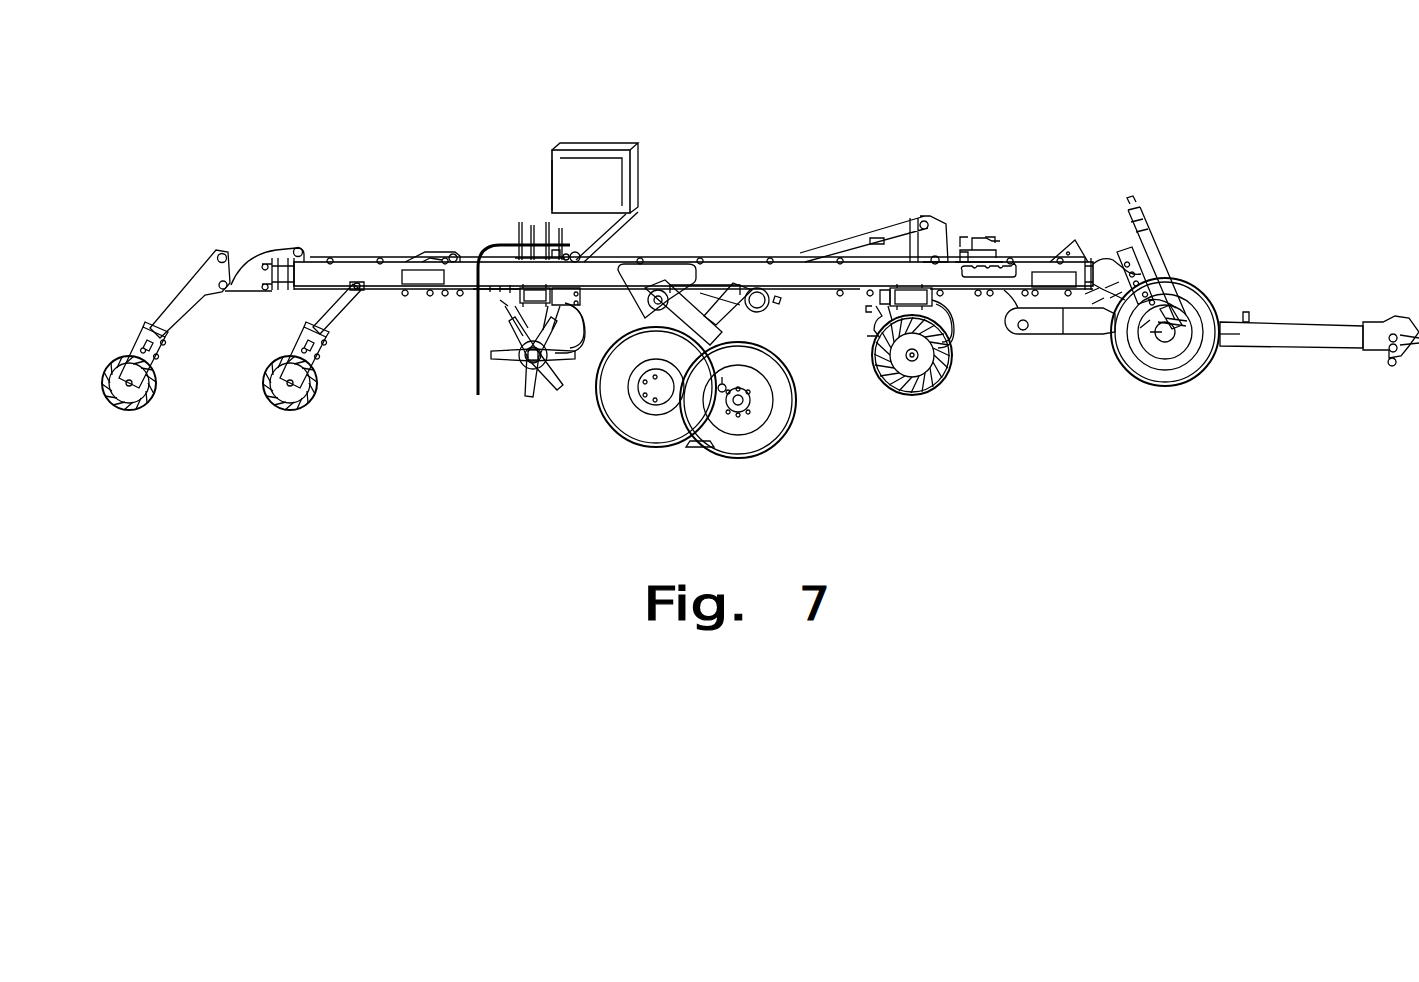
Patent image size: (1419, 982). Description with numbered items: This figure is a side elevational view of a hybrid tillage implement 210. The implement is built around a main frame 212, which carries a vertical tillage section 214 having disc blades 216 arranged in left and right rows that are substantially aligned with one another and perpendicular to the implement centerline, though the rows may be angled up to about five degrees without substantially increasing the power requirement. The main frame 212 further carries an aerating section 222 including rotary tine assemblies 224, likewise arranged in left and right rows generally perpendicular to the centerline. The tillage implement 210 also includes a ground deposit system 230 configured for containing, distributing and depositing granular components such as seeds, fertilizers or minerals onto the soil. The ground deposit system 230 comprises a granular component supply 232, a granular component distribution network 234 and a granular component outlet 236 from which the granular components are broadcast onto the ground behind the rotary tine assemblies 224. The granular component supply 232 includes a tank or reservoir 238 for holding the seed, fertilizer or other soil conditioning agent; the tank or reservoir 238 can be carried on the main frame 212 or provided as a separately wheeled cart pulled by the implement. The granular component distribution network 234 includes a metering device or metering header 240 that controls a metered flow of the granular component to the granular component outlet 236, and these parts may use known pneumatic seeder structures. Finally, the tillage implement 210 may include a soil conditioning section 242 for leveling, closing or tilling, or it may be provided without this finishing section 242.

The tillage implement 210 is at (1220, 213).
The main frame 212 is at (1328, 332).
The vertical tillage section 214 is at (913, 405).
The disc blades 216 is at (940, 376).
The aerating section 222 is at (521, 408).
The rotary tine assemblies 224 is at (545, 397).
The ground deposit system 230 is at (598, 135).
The granular component supply 232 is at (543, 160).
The granular component distribution network 234 is at (478, 340).
The granular component outlet 236 is at (478, 395).
The tank or reservoir 238 is at (612, 178).
The metering device or metering header 240 is at (578, 230).
The soil conditioning section 242 is at (262, 415).